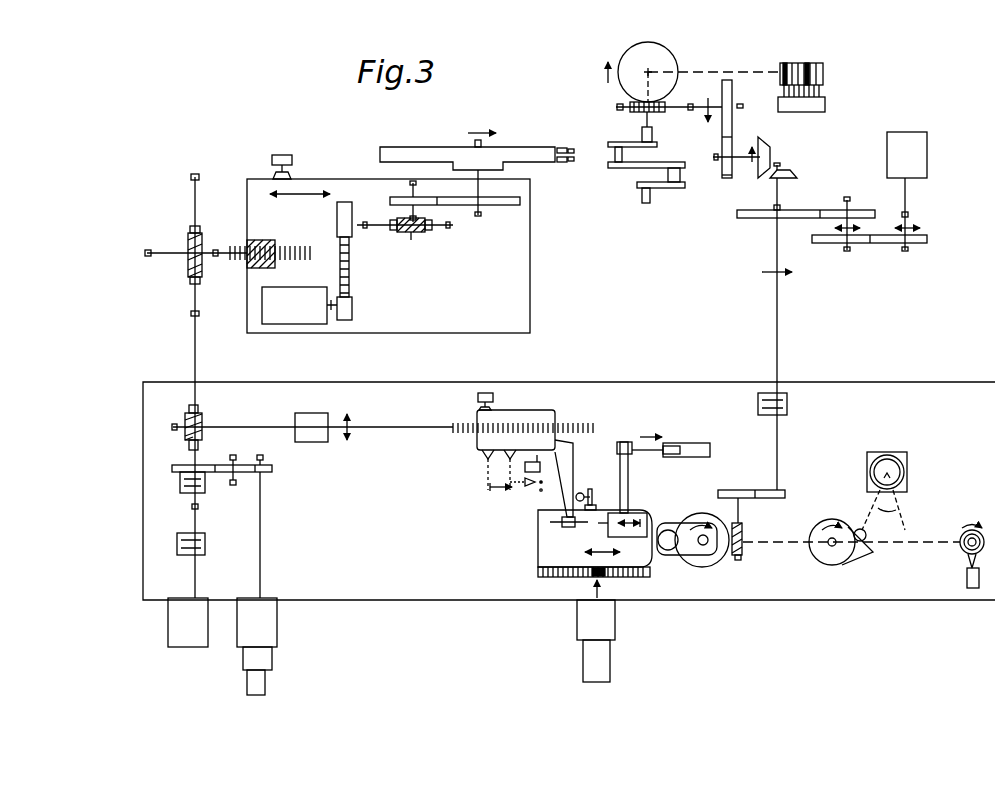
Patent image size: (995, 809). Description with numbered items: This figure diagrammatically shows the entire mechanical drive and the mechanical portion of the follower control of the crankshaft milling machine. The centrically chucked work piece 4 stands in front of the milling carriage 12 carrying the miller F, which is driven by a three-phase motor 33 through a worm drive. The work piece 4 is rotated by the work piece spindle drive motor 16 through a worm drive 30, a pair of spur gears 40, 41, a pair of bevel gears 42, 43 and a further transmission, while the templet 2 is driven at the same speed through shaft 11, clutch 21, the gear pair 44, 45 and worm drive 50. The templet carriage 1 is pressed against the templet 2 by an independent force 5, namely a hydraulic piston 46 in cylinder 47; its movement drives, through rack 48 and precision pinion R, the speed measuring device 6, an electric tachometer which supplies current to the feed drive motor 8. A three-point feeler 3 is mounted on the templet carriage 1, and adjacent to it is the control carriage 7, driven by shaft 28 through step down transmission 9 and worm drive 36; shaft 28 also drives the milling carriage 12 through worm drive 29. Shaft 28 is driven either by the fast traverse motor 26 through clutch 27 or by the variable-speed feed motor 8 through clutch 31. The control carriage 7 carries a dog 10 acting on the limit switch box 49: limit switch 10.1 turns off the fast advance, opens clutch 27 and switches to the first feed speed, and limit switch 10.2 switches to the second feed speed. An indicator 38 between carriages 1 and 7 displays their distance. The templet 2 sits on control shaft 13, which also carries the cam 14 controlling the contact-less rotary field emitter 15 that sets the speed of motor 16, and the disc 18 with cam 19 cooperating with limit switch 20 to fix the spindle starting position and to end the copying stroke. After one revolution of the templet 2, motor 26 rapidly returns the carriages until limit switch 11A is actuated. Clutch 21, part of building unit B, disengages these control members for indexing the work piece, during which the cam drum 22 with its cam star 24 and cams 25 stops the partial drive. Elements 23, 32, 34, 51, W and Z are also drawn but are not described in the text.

The templet carriage 1 is at (567, 563).
The templet 2 is at (668, 552).
The three-point feeler 3 is at (612, 513).
The work piece 4 is at (670, 62).
The independent force 5 is at (687, 443).
The speed measuring device 6 is at (583, 663).
The control carriage 7 is at (553, 410).
The feed drive motor 8 is at (277, 628).
The step down transmission 9 is at (306, 443).
The dog 10 is at (495, 460).
The limit switch 10.1 is at (553, 483).
The limit switch 10.2 is at (553, 494).
The shaft 11 is at (779, 292).
The limit switch 11A is at (290, 156).
The milling carriage 12 is at (311, 216).
The control shaft 13 is at (706, 548).
The cam 14 is at (832, 566).
The rotary field emitter 15 is at (907, 466).
The work piece spindle drive motor 16 is at (927, 155).
The disc 18 is at (962, 536).
The cam 19 is at (966, 551).
The limit switch 20 is at (967, 578).
The clutch 21 is at (787, 405).
The cam drum 22 is at (823, 75).
The bar 23 is at (780, 209).
The cam star 24 is at (785, 63).
The cams 25 is at (810, 63).
The fast traverse motor 26 is at (170, 641).
The clutch 27 is at (206, 543).
The shaft 28 is at (198, 330).
The worm drive 29 is at (200, 271).
The worm drive 30 is at (658, 112).
The clutch 31 is at (205, 490).
The motor 32 is at (265, 682).
The three-phase motor 33 is at (303, 314).
The pin 34 is at (560, 522).
The worm drive 36 is at (198, 438).
The indicator 38 is at (580, 492).
The spur gear 40 is at (731, 133).
The spur gear 41 is at (722, 176).
The bevel gear 42 is at (766, 141).
The bevel gear 43 is at (793, 172).
The gear 44 is at (778, 490).
The gear 45 is at (737, 490).
The hydraulic piston 46 is at (680, 458).
The cylinder 47 is at (710, 450).
The rack 48 is at (548, 577).
The limit switch box 49 is at (525, 480).
The worm drive 50 is at (742, 525).
The angle indicator 51 is at (898, 512).
The building unit B is at (152, 585).
The miller F is at (477, 151).
The pinion R is at (590, 579).
The workpiece holder W is at (630, 133).
The feed Z is at (615, 157).